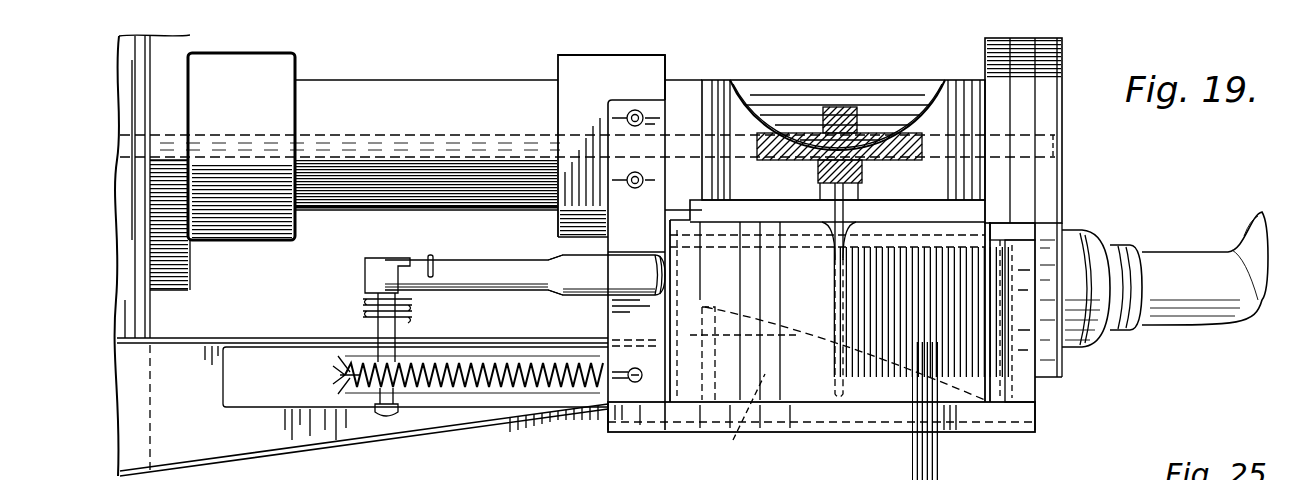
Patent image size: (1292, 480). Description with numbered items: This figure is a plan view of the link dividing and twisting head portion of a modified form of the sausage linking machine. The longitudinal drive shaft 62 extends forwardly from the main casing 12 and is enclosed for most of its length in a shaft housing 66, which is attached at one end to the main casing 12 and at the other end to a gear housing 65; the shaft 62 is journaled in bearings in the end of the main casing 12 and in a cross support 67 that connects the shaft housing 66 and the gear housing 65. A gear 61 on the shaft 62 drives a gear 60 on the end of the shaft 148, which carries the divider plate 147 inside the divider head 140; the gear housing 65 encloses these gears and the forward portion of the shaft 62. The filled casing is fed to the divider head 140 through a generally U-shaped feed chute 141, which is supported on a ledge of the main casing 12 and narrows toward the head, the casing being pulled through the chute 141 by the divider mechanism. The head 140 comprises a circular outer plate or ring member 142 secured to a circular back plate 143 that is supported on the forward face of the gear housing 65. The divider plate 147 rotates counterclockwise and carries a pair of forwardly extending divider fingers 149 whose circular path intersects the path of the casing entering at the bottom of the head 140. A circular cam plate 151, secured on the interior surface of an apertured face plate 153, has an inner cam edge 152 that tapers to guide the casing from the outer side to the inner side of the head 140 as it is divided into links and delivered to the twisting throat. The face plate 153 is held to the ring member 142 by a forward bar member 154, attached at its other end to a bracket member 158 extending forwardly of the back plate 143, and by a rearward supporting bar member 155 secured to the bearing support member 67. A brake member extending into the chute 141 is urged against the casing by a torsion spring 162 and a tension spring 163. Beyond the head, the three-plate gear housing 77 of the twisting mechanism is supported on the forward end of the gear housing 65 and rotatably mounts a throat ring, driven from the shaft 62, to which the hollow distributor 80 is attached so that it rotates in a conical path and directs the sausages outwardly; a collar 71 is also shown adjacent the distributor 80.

The main casing 12 is at (147, 306).
The gear 60 is at (772, 160).
The gear 61 is at (846, 106).
The longitudinal shaft 62 is at (434, 140).
The gear housing 65 is at (908, 82).
The shaft housing 66 is at (408, 90).
The cross support 67 is at (621, 78).
The collar 71 is at (1118, 250).
The gear housing 77 is at (1062, 140).
The hollow distributor 80 is at (1190, 264).
The divider head 140 is at (865, 445).
The feed chute 141 is at (411, 435).
The outer plate or ring member 142 is at (812, 369).
The back plate 143 is at (679, 218).
The divider plate 147 is at (742, 262).
The shaft 148 is at (838, 214).
The divider fingers 149 is at (833, 305).
The cam plate 151 is at (742, 419).
The inner cam edge 152 is at (750, 312).
The face plate 153 is at (948, 420).
The forward bar member 154 is at (1032, 392).
The rearward supporting bar member 155 is at (610, 318).
The bracket member 158 is at (1025, 232).
The torsion spring 162 is at (418, 298).
The tension spring 163 is at (500, 362).